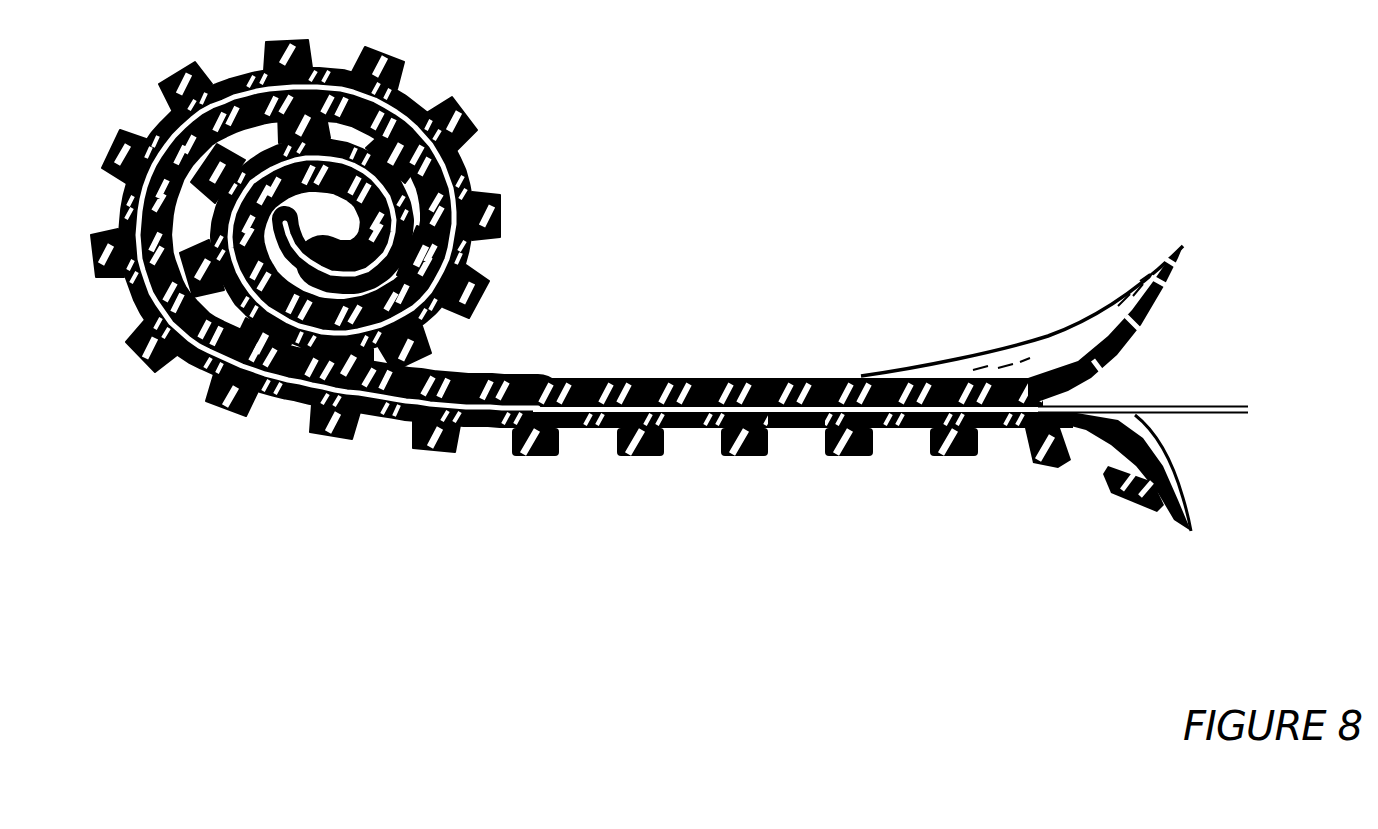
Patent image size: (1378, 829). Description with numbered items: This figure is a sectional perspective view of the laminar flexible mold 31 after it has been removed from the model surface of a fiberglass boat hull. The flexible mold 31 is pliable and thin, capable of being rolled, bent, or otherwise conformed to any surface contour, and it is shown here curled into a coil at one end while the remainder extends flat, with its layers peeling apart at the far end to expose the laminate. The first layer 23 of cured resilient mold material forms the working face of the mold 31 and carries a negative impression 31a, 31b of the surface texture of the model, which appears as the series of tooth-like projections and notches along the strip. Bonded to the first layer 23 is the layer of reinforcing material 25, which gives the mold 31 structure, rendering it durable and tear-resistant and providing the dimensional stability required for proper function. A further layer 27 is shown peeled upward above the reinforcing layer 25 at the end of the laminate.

The laminar flexible mold 31 is at (542, 490).
The negative impression 31a is at (713, 449).
The negative impression 31b is at (790, 437).
The layer of reinforcing material 25 is at (1207, 395).
The upper layer peeled away 27 is at (1172, 245).
The first layer of cured resilient mold material 23 is at (1183, 523).